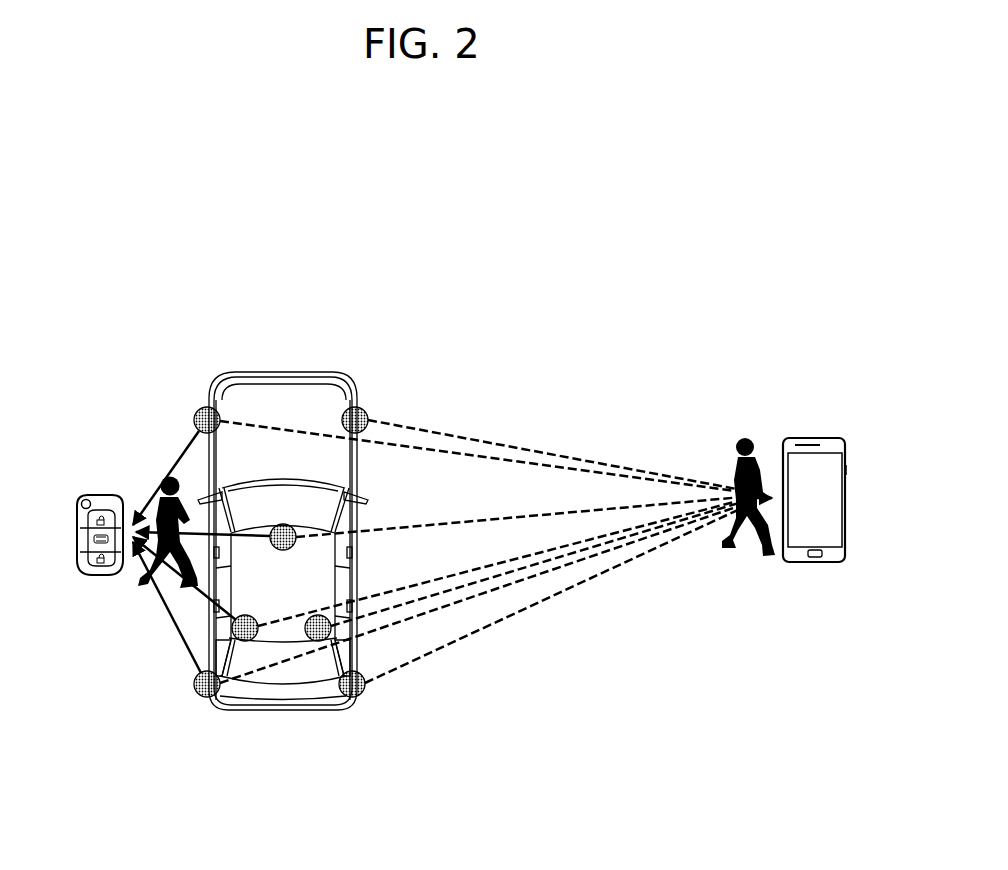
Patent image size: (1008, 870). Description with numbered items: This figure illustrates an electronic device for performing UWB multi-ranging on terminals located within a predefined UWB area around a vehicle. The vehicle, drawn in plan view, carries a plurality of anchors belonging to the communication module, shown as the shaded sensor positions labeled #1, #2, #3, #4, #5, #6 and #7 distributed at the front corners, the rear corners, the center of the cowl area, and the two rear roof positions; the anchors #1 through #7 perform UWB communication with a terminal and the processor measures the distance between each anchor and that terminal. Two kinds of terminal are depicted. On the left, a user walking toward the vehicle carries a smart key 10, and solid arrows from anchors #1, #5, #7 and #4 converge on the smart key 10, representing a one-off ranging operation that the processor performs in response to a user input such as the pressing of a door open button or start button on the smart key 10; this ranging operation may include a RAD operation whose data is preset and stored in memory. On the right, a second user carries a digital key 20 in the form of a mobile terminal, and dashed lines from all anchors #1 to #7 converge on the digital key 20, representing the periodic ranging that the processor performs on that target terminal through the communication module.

The smart key 10 is at (100, 493).
The digital key 20 is at (811, 437).
The first UWB sensor # 1 is at (197, 405).
The second UWB sensor # 2 is at (363, 406).
The third UWB sensor # 3 is at (361, 699).
The fourth UWB sensor # 4 is at (198, 699).
The fifth UWB sensor # 5 is at (282, 524).
The sixth UWB sensor # 6 is at (316, 643).
The seventh UWB sensor # 7 is at (243, 643).